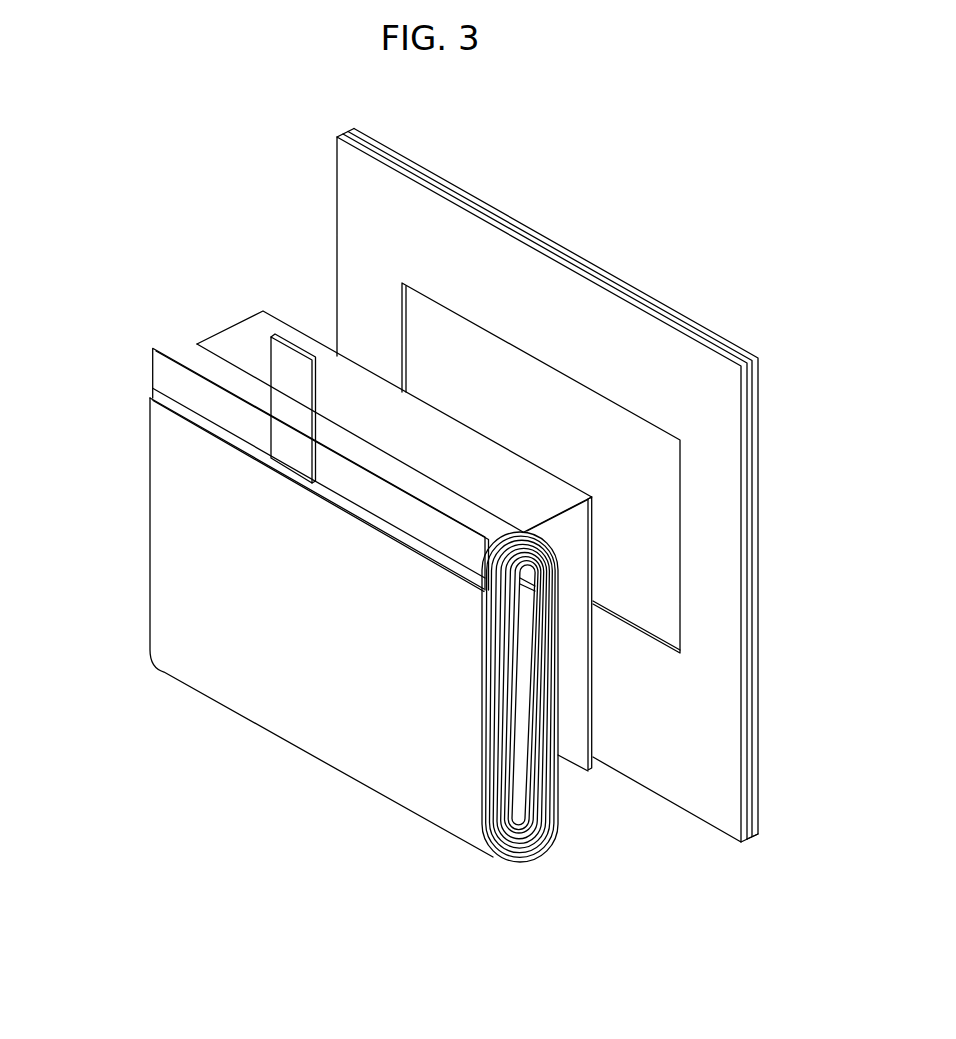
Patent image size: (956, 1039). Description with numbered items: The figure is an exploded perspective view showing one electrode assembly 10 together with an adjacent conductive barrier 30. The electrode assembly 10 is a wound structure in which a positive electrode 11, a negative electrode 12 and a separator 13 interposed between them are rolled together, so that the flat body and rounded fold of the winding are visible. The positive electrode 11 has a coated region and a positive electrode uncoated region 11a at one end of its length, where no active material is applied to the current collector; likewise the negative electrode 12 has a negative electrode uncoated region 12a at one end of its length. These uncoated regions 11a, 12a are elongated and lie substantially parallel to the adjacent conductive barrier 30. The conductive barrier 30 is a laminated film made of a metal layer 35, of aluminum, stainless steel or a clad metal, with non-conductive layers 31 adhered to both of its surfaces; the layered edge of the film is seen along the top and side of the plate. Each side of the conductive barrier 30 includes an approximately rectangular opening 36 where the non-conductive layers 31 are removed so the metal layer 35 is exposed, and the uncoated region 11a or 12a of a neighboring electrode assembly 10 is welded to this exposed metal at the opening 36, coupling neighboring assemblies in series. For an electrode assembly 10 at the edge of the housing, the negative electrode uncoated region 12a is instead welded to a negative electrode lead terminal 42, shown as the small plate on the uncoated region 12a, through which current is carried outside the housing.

The electrode assembly 10 is at (432, 599).
The positive electrode 11 is at (552, 810).
The positive electrode uncoated region 11a is at (577, 680).
The negative electrode 12 is at (168, 402).
The negative electrode uncoated region 12a is at (163, 372).
The separator 13 is at (490, 514).
The conductive barrier 30 is at (572, 486).
The non-conductive layer 31 is at (490, 222).
The metal layer 35 is at (531, 240).
The opening 36 is at (658, 523).
The negative electrode lead terminal 42 is at (278, 357).